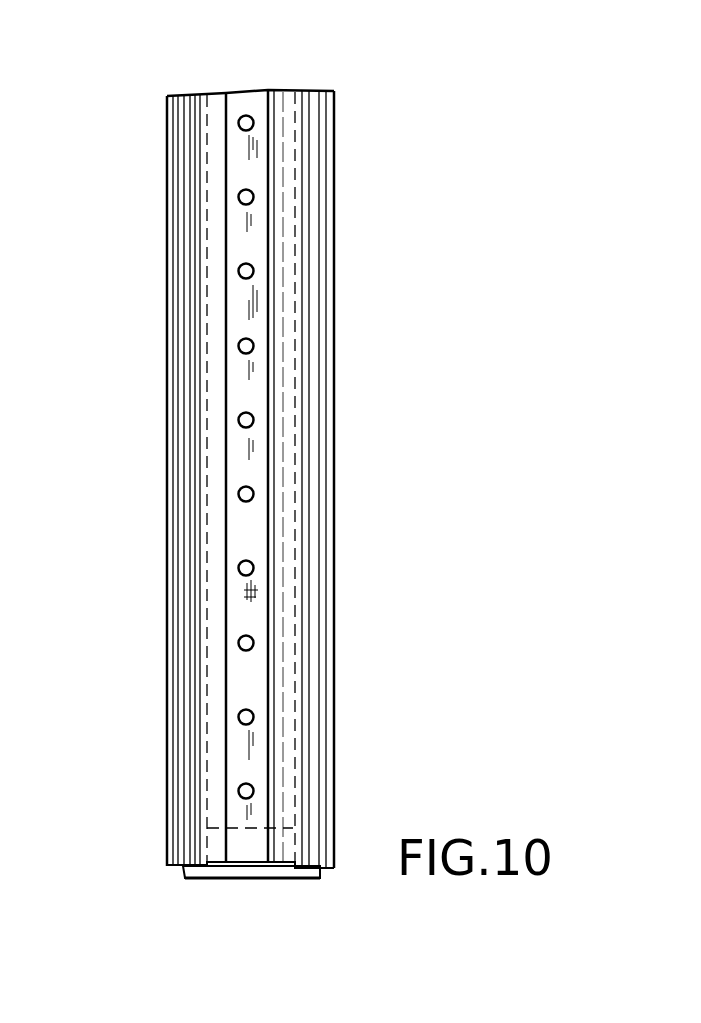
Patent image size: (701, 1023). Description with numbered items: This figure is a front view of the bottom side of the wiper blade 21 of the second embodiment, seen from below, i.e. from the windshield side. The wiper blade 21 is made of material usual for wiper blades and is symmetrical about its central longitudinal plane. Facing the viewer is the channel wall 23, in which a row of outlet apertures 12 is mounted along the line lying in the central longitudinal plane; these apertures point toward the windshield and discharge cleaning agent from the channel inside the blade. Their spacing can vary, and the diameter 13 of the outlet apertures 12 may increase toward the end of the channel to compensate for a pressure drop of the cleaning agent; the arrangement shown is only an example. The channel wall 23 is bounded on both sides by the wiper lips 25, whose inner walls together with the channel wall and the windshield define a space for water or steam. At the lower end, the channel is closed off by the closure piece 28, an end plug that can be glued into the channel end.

The wiper blade 21 is at (267, 75).
The outlet apertures 12 is at (253, 118).
The diameter 13 is at (253, 194).
The wiper lips 25 is at (190, 180).
The channel wall 23 is at (283, 328).
The closure piece 28 is at (183, 873).